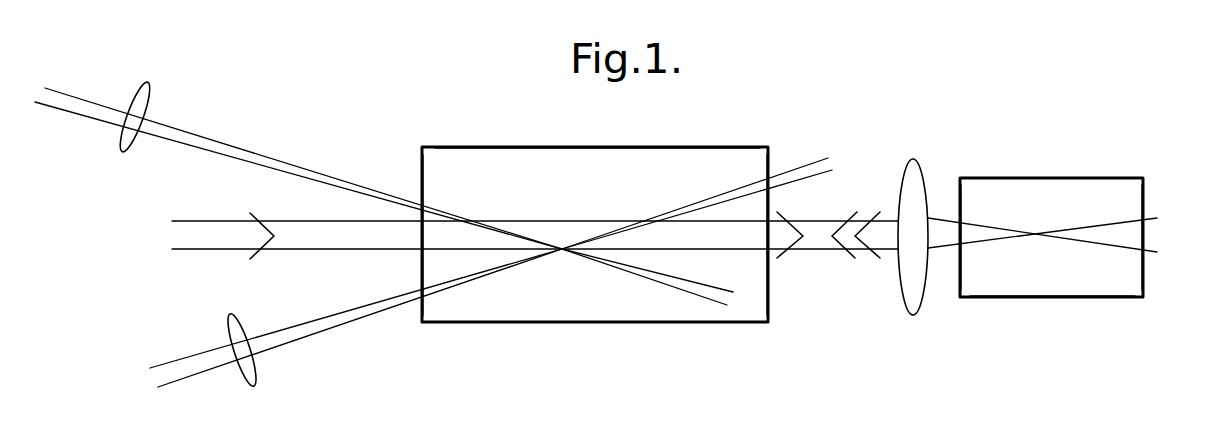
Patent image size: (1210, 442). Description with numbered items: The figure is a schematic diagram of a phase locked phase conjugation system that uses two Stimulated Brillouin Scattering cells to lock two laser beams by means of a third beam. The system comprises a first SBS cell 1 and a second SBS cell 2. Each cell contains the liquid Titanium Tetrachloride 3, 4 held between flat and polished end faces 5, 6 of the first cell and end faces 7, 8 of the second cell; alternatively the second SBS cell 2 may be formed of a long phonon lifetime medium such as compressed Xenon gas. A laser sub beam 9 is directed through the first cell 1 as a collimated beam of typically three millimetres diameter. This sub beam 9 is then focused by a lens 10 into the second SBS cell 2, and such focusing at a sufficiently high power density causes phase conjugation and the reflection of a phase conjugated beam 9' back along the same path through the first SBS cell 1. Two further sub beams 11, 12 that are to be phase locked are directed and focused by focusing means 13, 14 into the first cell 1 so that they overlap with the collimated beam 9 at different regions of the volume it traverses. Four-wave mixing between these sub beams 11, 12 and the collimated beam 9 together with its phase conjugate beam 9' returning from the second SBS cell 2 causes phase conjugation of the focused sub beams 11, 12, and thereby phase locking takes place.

The first SBS cell 1 is at (731, 127).
The second SBS cell 2 is at (1147, 163).
The liquid Titanium Tetrachloride 3 is at (477, 145).
The liquid Titanium Tetrachloride 4 is at (1075, 280).
The end face 5 is at (420, 160).
The end face 6 is at (770, 156).
The end face 7 is at (960, 187).
The end face 8 is at (1147, 278).
The laser sub beam 9 is at (655, 223).
The phase conjugated beam 9' is at (852, 257).
The lens 10 is at (902, 292).
The sub beam 11 is at (182, 381).
The sub beam 12 is at (82, 95).
The focusing means 13 is at (258, 375).
The focusing means 14 is at (152, 95).